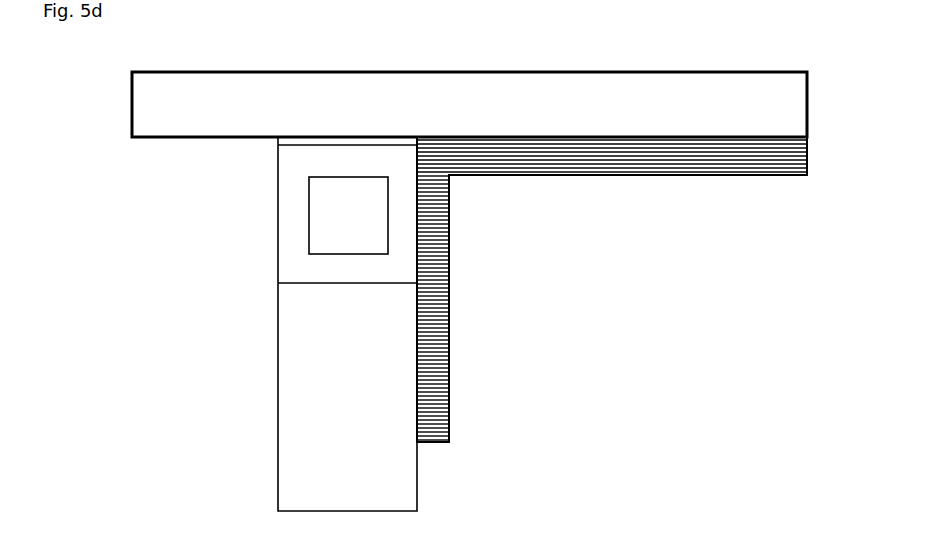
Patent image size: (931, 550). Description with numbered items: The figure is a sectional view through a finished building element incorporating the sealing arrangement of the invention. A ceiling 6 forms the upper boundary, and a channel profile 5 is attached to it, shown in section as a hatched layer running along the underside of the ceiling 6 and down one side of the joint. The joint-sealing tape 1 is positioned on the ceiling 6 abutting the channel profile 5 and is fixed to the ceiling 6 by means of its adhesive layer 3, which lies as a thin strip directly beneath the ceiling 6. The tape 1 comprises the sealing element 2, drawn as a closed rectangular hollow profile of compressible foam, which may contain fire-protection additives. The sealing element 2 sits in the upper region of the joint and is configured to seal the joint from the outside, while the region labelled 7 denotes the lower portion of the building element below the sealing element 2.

The joint-sealing tape 1 is at (272, 225).
The sealing element 2 is at (405, 204).
The adhesive layer 3 is at (342, 142).
The channel profile 5 is at (580, 155).
The ceiling 6 is at (725, 110).
The lower profile section 7 is at (377, 490).